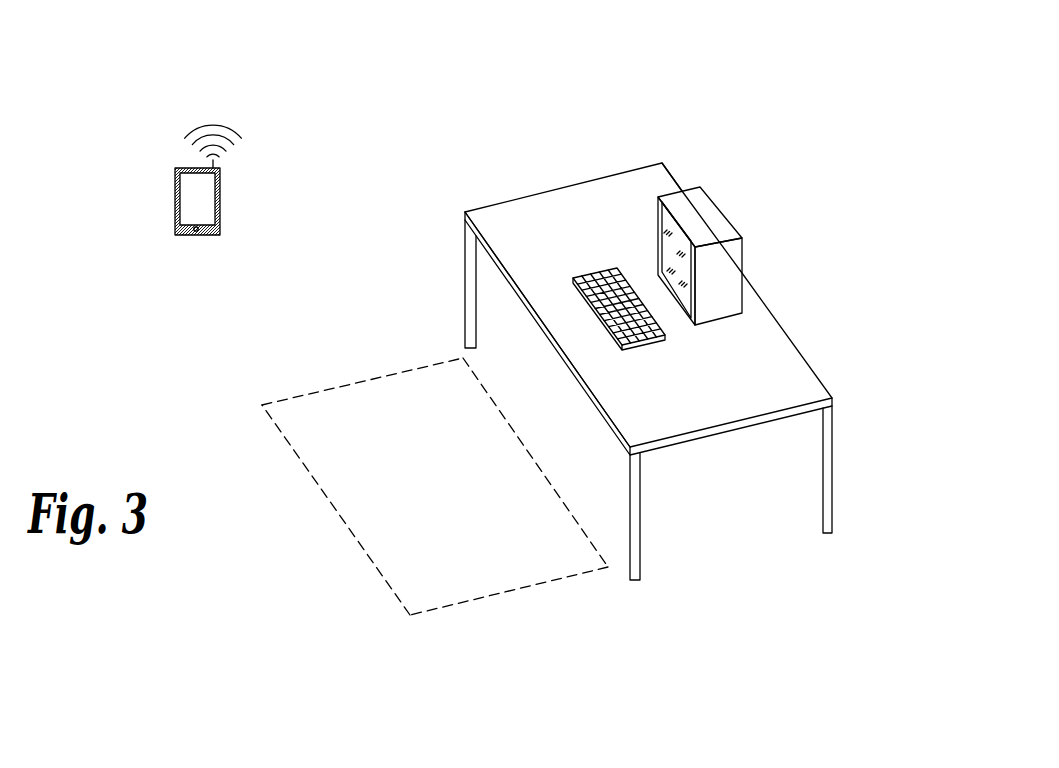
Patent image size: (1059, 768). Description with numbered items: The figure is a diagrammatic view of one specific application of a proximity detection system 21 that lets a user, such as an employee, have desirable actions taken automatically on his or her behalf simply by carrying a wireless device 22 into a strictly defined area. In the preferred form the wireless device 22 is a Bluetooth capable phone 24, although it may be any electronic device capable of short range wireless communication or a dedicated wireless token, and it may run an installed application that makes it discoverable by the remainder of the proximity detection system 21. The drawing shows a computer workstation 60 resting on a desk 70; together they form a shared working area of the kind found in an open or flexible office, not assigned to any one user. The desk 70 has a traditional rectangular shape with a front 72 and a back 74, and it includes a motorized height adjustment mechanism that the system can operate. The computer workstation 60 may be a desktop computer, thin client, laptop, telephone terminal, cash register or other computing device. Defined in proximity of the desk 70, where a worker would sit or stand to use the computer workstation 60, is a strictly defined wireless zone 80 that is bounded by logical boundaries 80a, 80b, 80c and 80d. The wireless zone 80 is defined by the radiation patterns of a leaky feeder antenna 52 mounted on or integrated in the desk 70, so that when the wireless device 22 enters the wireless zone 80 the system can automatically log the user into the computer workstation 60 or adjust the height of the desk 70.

The proximity detection system 21 is at (769, 120).
The wireless device 22 is at (183, 168).
The phone 24 is at (220, 198).
The leaky feeder antenna 52 is at (507, 268).
The computer workstation 60 is at (727, 262).
The desk 70 is at (793, 382).
The front 72 is at (470, 235).
The back 74 is at (680, 165).
The wireless zone 80 is at (436, 488).
The logical boundary 80a is at (347, 385).
The logical boundary 80b is at (348, 525).
The logical boundary 80c is at (463, 601).
The logical boundary 80d is at (514, 432).